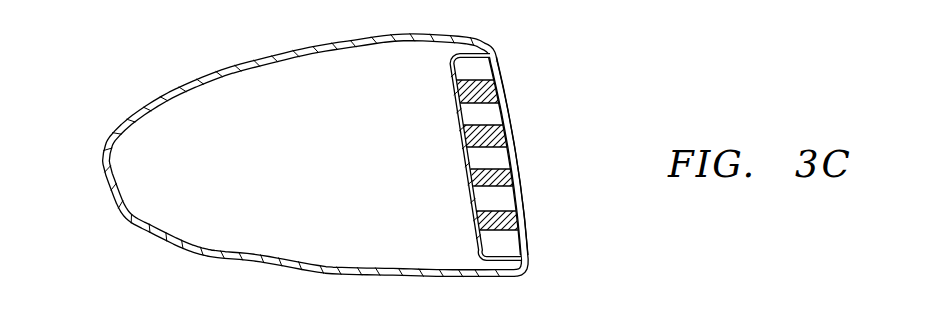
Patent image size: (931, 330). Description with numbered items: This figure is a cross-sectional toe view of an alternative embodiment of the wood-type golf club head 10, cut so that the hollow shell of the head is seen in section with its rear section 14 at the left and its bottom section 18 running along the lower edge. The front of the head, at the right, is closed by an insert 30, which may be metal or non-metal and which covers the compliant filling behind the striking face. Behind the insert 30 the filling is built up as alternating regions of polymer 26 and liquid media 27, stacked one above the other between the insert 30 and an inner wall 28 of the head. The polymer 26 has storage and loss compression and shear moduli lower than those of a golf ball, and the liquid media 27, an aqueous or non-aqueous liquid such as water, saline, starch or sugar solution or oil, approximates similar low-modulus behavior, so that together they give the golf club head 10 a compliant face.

The golf club head 10 is at (125, 53).
The rear section 14 is at (148, 238).
The bottom section 18 is at (335, 278).
The polymer 26 is at (500, 70).
The insert 30 is at (517, 157).
The inner liner wall 28 is at (463, 152).
The liquid media 27 is at (498, 202).